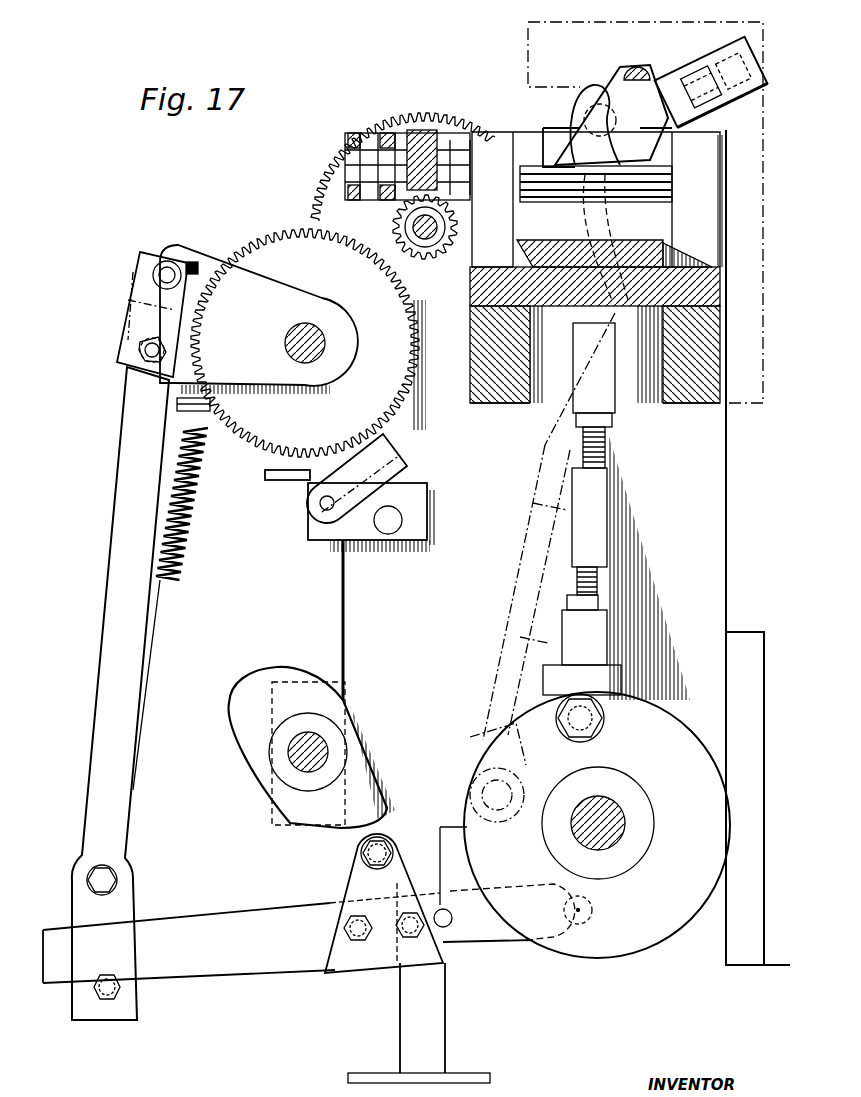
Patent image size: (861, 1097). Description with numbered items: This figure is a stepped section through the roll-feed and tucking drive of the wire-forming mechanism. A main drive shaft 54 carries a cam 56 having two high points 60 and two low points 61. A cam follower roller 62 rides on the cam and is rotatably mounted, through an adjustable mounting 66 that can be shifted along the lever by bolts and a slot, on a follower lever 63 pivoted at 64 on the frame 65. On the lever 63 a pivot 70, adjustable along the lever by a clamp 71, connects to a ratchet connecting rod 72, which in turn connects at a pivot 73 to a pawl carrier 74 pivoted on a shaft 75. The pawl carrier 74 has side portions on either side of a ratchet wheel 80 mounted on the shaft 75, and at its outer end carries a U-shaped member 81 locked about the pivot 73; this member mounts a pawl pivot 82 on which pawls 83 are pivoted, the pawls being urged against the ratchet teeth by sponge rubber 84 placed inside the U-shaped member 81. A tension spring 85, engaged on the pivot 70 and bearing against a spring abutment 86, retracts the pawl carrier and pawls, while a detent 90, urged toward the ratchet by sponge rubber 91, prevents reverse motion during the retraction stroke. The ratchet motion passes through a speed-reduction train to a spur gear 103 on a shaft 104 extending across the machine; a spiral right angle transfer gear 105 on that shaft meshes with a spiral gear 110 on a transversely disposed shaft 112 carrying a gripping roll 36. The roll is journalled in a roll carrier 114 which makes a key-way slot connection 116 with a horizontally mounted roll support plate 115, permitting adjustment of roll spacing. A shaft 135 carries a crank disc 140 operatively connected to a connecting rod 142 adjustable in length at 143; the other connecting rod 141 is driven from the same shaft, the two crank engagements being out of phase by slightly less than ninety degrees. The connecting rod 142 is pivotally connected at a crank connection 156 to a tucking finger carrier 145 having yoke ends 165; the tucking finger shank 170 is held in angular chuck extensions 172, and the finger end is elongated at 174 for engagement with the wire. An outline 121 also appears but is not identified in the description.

The gripping roll 36 is at (550, 130).
The main drive shaft 54 is at (288, 745).
The cam 56 is at (268, 670).
The high point 60 is at (237, 688).
The low point 61 is at (358, 712).
The cam follower roller 62 is at (358, 852).
The follower lever 63 is at (258, 900).
The pivot 64 is at (578, 925).
The frame 65 is at (726, 478).
The adjustable mounting 66 is at (358, 935).
The pivot 70 is at (110, 882).
The clamp 71 is at (122, 987).
The ratchet connecting rod 72 is at (112, 545).
The ratchet connecting rod pivot 73 is at (130, 368).
The pawl carrier 74 is at (263, 305).
The shaft 75 is at (320, 335).
The ratchet wheel 80 is at (255, 234).
The U-shaped member 81 is at (140, 285).
The pawl pivot 82 is at (170, 262).
The pawl 83 is at (206, 262).
The sponge rubber 84 is at (117, 332).
The tension spring 85 is at (178, 520).
The spring abutment 86 is at (205, 418).
The detent 90 is at (330, 470).
The sponge rubber 91 is at (330, 540).
The spur gear 103 is at (345, 168).
The shaft 104 is at (440, 227).
The spiral right angle transfer gear 105 is at (428, 262).
The spiral gear 110 is at (432, 135).
The shaft 112 is at (468, 162).
The roll carrier 114 is at (700, 192).
The roll support plate 115 is at (722, 292).
The key-way slot connection 116 is at (685, 252).
The phantom housing 121 is at (528, 50).
The shaft 135 is at (620, 845).
The crank disc 140 is at (597, 825).
The connecting rod 141 is at (515, 612).
The connecting rod 142 is at (583, 633).
The length adjustment 143 is at (598, 583).
The tucking finger carrier 145 is at (672, 75).
The crank connection 156 is at (590, 96).
The yoke ends 165 is at (762, 90).
The tucking finger shank 170 is at (715, 118).
The angular chuck extension 172 is at (637, 70).
The elongated end 174 is at (560, 150).